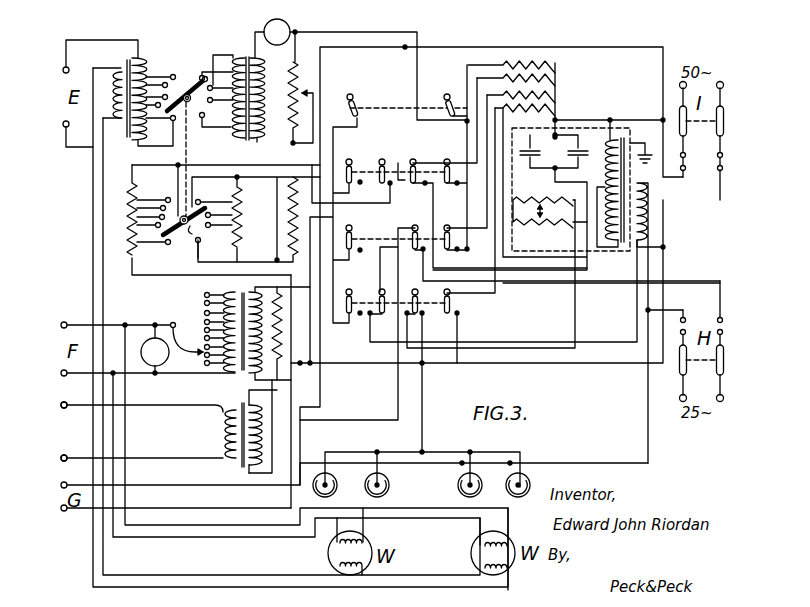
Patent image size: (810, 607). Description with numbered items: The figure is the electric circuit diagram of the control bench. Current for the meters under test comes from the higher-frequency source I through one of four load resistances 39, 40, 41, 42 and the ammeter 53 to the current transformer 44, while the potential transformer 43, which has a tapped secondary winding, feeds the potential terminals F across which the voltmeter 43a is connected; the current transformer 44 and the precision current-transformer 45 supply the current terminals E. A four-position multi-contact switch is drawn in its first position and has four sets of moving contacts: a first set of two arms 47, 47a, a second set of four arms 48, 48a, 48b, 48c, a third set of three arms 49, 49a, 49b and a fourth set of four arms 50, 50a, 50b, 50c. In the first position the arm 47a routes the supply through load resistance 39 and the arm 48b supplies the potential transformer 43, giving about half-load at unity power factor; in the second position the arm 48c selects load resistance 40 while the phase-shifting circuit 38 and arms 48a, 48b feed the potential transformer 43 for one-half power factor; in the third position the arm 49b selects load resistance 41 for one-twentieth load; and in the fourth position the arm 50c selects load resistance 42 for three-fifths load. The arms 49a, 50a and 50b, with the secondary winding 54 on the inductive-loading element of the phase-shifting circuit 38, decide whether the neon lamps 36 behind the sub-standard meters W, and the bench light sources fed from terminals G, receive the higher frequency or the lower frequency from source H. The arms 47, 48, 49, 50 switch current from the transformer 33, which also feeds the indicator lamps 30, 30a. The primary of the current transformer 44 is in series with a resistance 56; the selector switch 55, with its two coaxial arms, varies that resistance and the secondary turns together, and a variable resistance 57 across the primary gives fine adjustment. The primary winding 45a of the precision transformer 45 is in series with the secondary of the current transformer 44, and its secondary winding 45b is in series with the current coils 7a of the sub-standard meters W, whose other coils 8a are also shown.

The secondary winding 45b is at (115, 76).
The precision current-transformer 45 is at (134, 58).
The primary winding 45a is at (148, 70).
The current transformer 44 is at (247, 54).
The ammeter 53 is at (277, 22).
The variable resistance 57 is at (289, 88).
The selector switch 55 is at (200, 133).
The resistance 56 is at (246, 187).
The potential transformer 43 is at (207, 303).
The voltmeter 43a is at (152, 338).
The transformer 33 is at (222, 432).
The lamps 30 is at (74, 416).
The lamps 30a is at (75, 445).
The neon lamps 36 is at (421, 473).
The current coils 7a is at (340, 563).
The heater coil 8a is at (363, 542).
The arm 47 is at (356, 89).
The arm 47a is at (447, 95).
The arm 48 is at (348, 160).
The arm 48a is at (379, 160).
The arm 48b is at (418, 156).
The arm 48c is at (447, 184).
The arm 49 is at (360, 236).
The arm 49a is at (425, 221).
The arm 49b is at (449, 229).
The arm 50 is at (348, 290).
The arm 50a is at (381, 290).
The arm 50b is at (421, 287).
The arm 50c is at (451, 313).
The load resistance 39 is at (531, 62).
The load resistance 40 is at (557, 78).
The load resistance 41 is at (557, 95).
The load resistance 42 is at (557, 108).
The phase-shifting circuit 38 is at (603, 120).
The secondary winding 54 is at (650, 207).